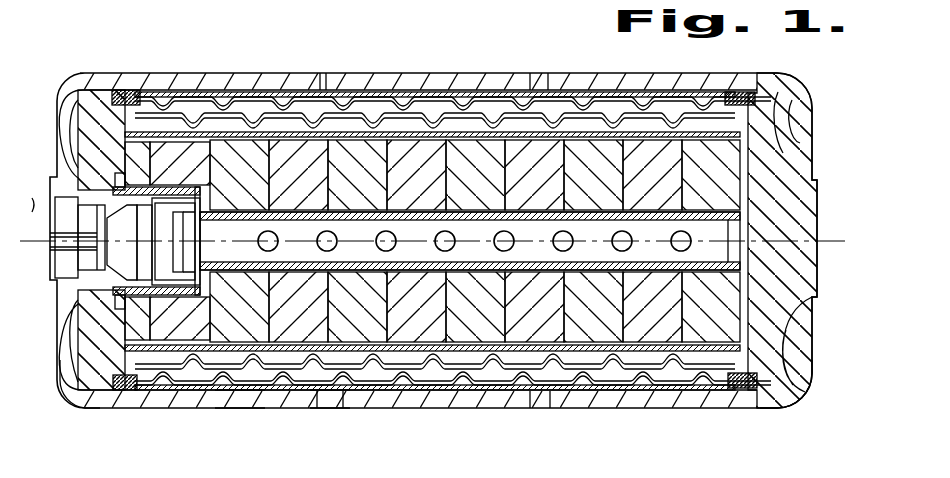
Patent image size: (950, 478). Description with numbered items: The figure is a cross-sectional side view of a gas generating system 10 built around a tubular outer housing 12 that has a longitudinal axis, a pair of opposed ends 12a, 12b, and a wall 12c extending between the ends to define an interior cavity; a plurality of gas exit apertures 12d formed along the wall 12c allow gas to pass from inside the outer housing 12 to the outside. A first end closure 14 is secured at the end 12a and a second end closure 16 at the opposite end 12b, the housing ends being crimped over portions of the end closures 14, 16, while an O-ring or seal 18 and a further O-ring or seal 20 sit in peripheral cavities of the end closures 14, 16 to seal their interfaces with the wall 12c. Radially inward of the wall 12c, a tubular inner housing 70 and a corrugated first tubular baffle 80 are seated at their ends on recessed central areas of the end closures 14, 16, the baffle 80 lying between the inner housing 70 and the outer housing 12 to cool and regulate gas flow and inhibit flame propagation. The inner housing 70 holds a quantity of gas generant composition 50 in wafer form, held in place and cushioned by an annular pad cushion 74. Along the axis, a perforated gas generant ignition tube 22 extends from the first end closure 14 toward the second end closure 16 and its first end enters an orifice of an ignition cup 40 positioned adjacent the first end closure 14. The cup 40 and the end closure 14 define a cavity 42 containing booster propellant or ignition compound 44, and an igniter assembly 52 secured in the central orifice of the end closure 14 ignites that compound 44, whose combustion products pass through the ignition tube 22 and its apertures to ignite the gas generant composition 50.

The gas generating system 10 is at (95, 50).
The tubular outer housing 12 is at (592, 66).
The first end of outer housing 12a is at (78, 398).
The second end of outer housing 12b is at (793, 392).
The housing wall 12c is at (240, 400).
The gas exit apertures 12d is at (333, 404).
The first end closure 14 is at (97, 334).
The second end closure 16 is at (778, 315).
The O-ring or seal 18 is at (117, 391).
The O-ring or seal 20 is at (745, 384).
The gas generant ignition tube 22 is at (483, 252).
The ignition cup 40 is at (183, 190).
The cavity 42 is at (178, 276).
The ignition compound 44 is at (200, 240).
The gas generant composition 50 is at (422, 158).
The igniter assembly 52 is at (90, 268).
The tubular inner housing 70 is at (349, 131).
The pad cushion 74 is at (130, 156).
The first tubular baffle 80 is at (386, 117).